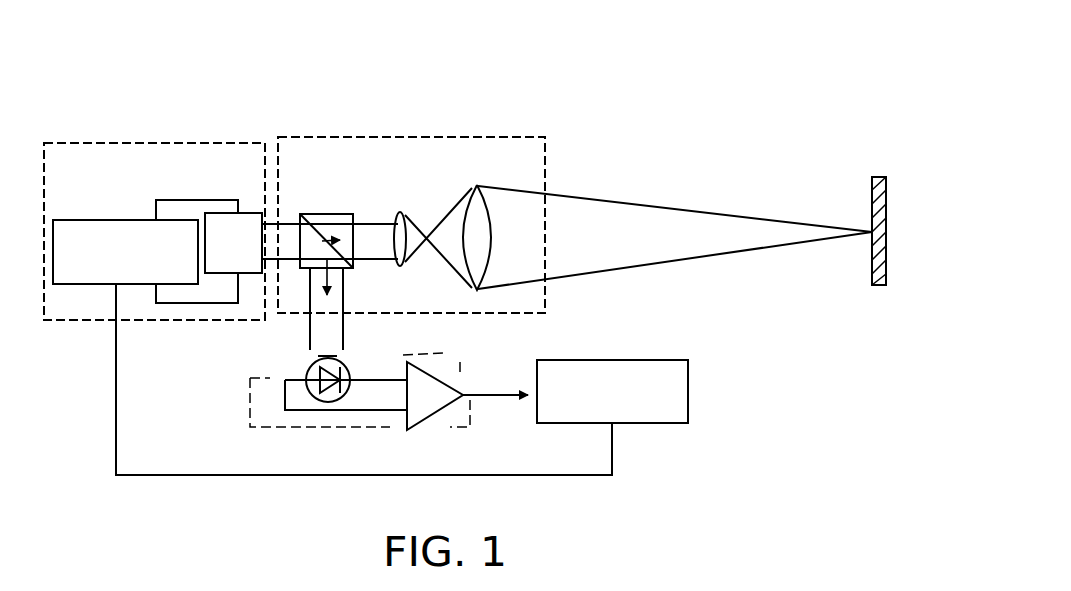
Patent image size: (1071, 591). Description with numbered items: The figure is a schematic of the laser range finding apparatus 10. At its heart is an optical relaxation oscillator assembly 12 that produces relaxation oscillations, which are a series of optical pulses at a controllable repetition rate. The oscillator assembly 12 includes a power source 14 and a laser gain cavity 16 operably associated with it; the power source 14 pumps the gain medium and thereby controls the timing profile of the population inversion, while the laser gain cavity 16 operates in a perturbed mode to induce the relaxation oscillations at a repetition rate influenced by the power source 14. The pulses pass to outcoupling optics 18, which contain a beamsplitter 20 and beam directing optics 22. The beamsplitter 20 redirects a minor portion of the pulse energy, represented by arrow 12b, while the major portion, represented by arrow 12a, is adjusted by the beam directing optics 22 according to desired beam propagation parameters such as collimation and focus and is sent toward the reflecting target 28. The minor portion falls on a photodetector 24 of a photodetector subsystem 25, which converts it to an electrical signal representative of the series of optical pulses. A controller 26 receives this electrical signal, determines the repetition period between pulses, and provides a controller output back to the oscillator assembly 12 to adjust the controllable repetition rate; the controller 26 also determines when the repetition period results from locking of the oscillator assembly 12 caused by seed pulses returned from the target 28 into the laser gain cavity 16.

The laser range finding apparatus 10 is at (618, 63).
The optical relaxation oscillator assembly 12 is at (140, 143).
The major portion of the energy of the series of optical pulses 12a is at (352, 218).
The minor portion of the energy of the series of optical pulses 12b is at (345, 272).
The power source 14 is at (84, 220).
The laser gain cavity 16 is at (240, 273).
The outcoupling optics 18 is at (492, 137).
The beamsplitter 20 is at (353, 215).
The beam directing optics 22 is at (403, 267).
The photodetector 24 is at (340, 368).
The photodetector subsystem 25 is at (458, 438).
The controller 26 is at (668, 423).
The reflecting target 28 is at (870, 272).